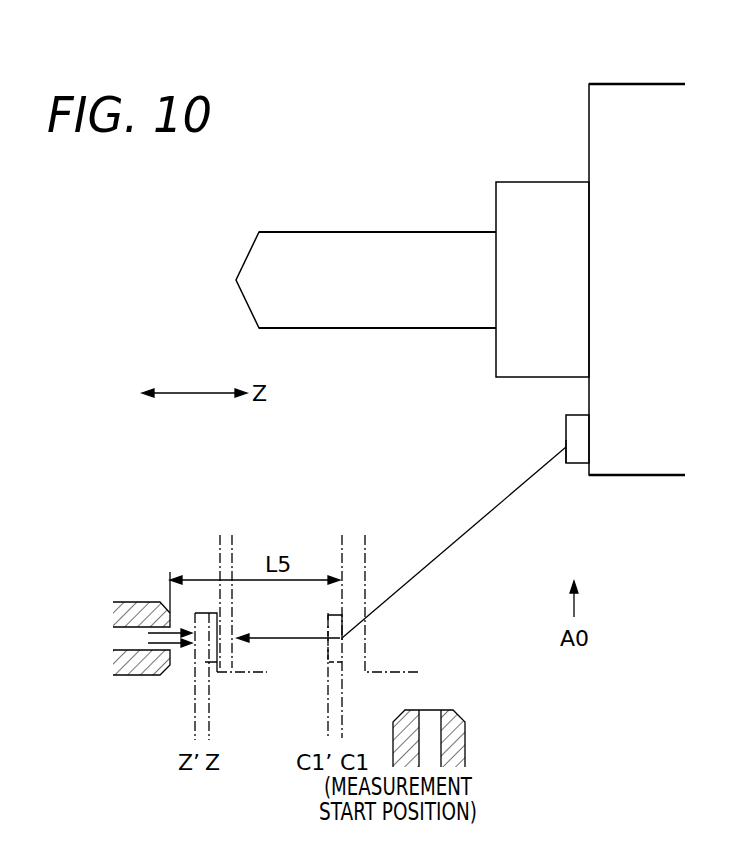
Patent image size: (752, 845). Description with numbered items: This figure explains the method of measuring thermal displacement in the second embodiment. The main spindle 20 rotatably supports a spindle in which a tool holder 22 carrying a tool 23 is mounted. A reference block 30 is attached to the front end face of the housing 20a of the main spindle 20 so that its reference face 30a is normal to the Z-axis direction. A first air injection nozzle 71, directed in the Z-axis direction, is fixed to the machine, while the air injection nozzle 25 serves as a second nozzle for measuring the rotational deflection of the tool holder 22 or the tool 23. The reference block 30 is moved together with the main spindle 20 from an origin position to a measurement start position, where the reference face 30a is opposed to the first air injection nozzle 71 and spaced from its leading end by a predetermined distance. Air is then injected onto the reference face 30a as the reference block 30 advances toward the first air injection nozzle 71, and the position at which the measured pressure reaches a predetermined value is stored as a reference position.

The main spindle 20 is at (628, 78).
The housing 20a is at (650, 478).
The tool holder 22 is at (530, 186).
The tool 23 is at (366, 236).
The reference block 30 is at (575, 462).
The reference face 30a is at (566, 428).
The first air injection nozzle 71 is at (133, 604).
The air injection nozzle 25 is at (457, 746).